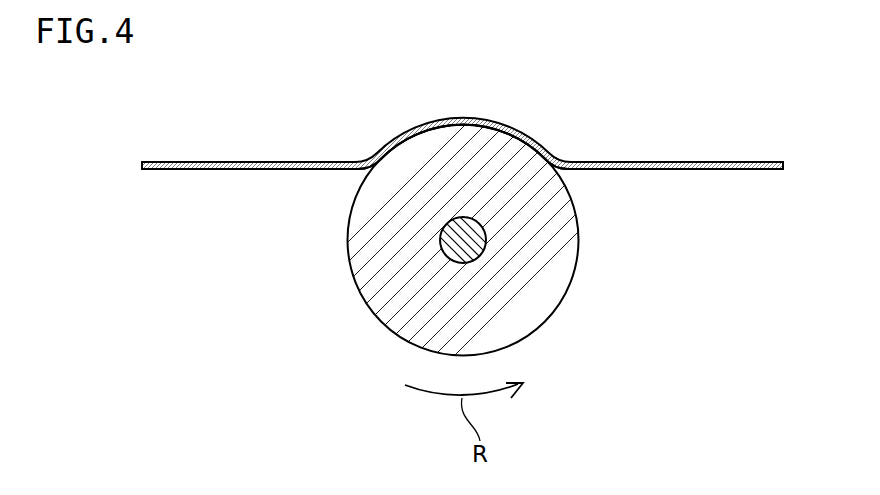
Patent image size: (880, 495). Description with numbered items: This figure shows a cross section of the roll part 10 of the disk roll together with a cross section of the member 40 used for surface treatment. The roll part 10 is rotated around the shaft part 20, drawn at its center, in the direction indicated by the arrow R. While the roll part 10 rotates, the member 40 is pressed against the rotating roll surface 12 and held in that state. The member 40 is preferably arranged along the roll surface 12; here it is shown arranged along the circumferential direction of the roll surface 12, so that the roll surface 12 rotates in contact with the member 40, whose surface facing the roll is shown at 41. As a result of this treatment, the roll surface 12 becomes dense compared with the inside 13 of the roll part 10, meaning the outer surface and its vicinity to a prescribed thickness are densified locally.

The roll part 10 is at (460, 240).
The roll surface 12 is at (377, 320).
The inside of the roll part 13 is at (575, 251).
The shaft part 20 is at (460, 242).
The member 40 is at (462, 169).
The inner surface of belt 41 is at (722, 170).